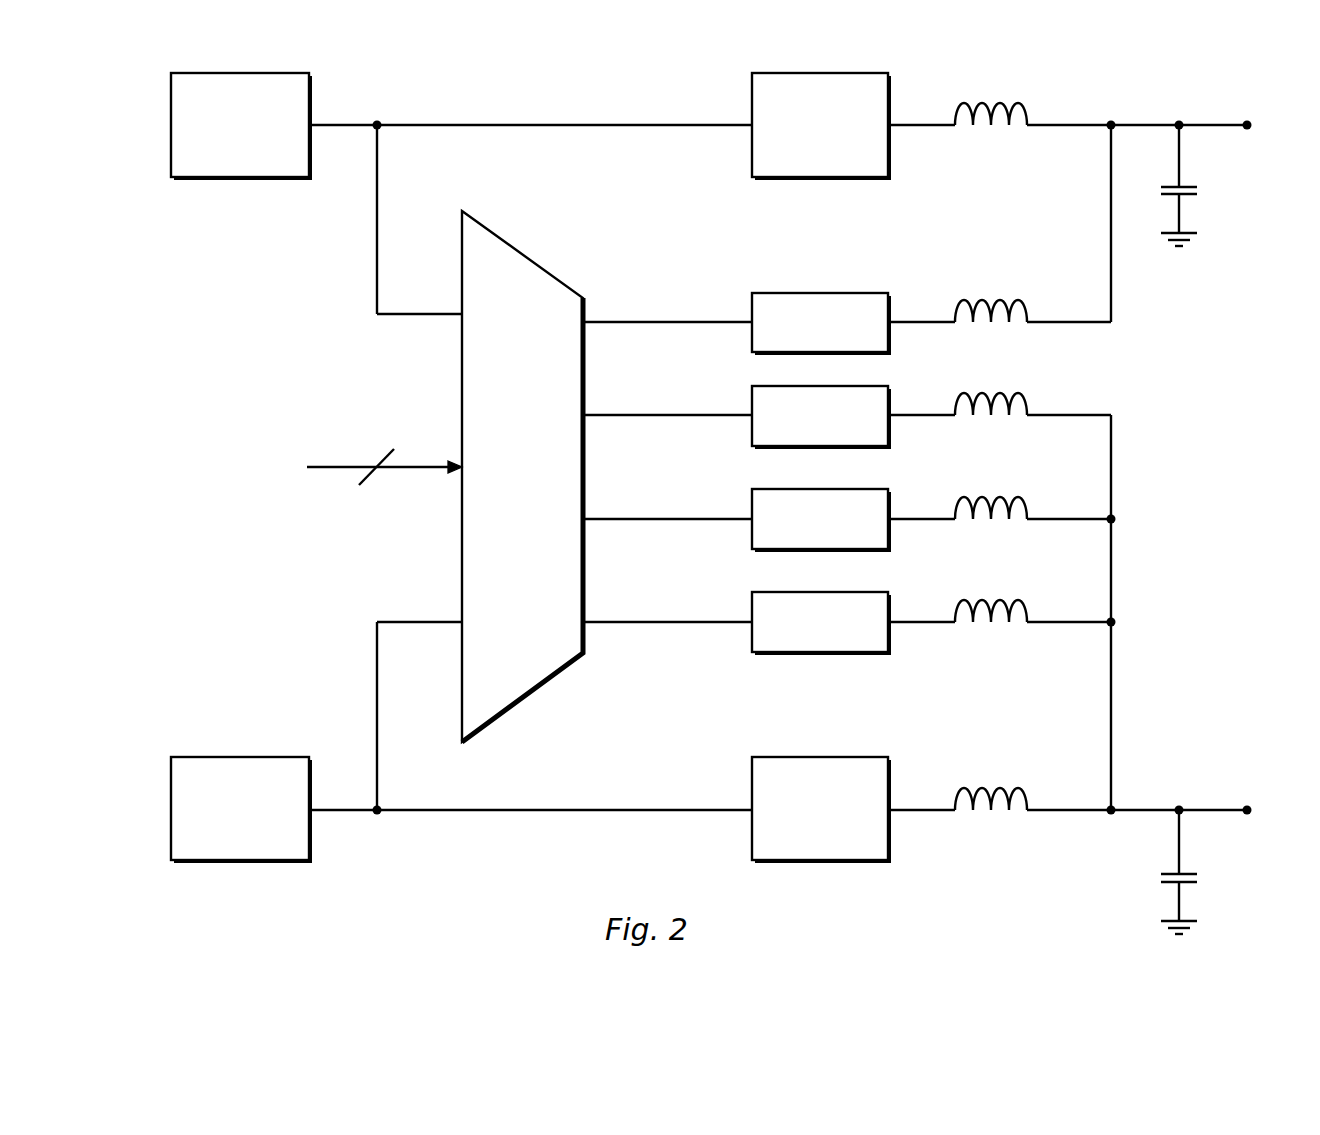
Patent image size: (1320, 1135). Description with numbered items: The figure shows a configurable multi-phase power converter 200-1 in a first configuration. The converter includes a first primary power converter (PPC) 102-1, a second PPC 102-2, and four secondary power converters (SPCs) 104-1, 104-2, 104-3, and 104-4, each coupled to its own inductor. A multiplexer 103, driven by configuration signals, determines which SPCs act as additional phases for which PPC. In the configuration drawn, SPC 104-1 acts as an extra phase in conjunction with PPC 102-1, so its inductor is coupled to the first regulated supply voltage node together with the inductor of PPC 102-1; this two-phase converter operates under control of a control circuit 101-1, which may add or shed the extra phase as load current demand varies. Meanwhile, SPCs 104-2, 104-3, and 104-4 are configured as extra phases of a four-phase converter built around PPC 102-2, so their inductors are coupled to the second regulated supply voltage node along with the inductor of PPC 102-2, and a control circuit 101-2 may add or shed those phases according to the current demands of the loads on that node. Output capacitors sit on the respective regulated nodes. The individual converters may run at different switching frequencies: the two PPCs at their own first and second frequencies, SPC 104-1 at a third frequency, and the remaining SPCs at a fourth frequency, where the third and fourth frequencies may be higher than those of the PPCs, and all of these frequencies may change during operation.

The configurable multi-phase power converter 200-1 is at (597, 64).
The control circuit 101-1 is at (265, 147).
The control circuit 101-2 is at (265, 831).
The first primary power converter 102-1 is at (868, 137).
The second primary power converter 102-2 is at (868, 821).
The multiplexer 103 is at (540, 499).
The secondary power converter 104-1 is at (868, 334).
The secondary power converter 104-2 is at (868, 427).
The secondary power converter 104-3 is at (868, 531).
The secondary power converter 104-4 is at (868, 634).